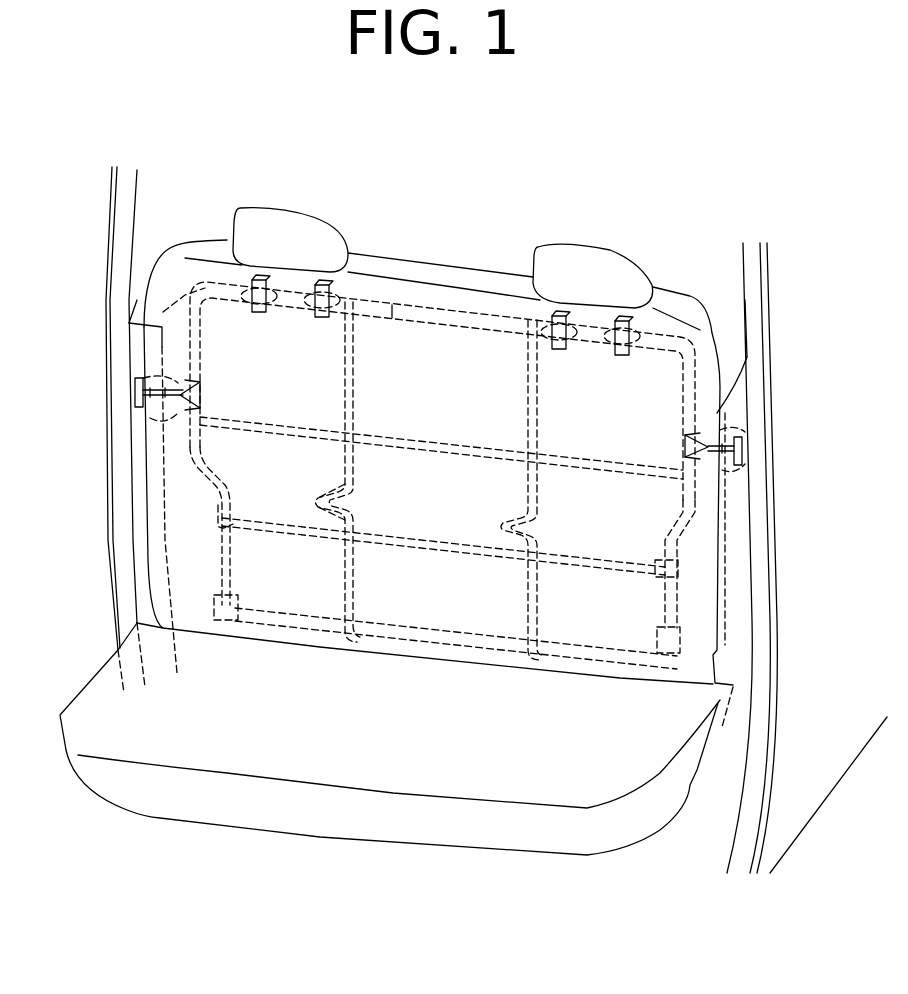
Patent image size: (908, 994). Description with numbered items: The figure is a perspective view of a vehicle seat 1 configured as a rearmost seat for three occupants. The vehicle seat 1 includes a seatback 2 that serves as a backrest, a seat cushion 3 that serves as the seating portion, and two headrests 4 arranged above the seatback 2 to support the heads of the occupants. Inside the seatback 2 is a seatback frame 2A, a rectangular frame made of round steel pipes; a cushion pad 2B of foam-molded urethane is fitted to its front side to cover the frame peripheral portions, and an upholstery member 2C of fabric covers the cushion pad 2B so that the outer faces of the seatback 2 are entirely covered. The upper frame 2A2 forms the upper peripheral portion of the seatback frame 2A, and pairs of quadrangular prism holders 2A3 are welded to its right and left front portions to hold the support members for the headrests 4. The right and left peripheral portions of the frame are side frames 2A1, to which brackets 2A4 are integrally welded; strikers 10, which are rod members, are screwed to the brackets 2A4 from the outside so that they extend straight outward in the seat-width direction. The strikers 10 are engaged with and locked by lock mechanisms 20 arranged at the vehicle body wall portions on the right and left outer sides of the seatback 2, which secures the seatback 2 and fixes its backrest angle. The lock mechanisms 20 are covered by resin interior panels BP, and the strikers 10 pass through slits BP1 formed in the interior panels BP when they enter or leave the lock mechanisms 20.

The vehicle seat 1 is at (378, 192).
The seatback 2 is at (163, 503).
The seatback frame 2A is at (415, 307).
The side frame 2A1 is at (196, 343).
The upper frame 2A2 is at (395, 320).
The holder 2A3 is at (263, 317).
The bracket 2A4 is at (200, 395).
The cushion pad 2B is at (397, 470).
The upholstery member 2C is at (350, 494).
The seat cushion 3 is at (108, 688).
The headrest 4 is at (258, 230).
The interior panel BP is at (135, 338).
The slit BP1 is at (135, 392).
The striker 10 is at (162, 410).
The lock mechanism 20 is at (155, 378).